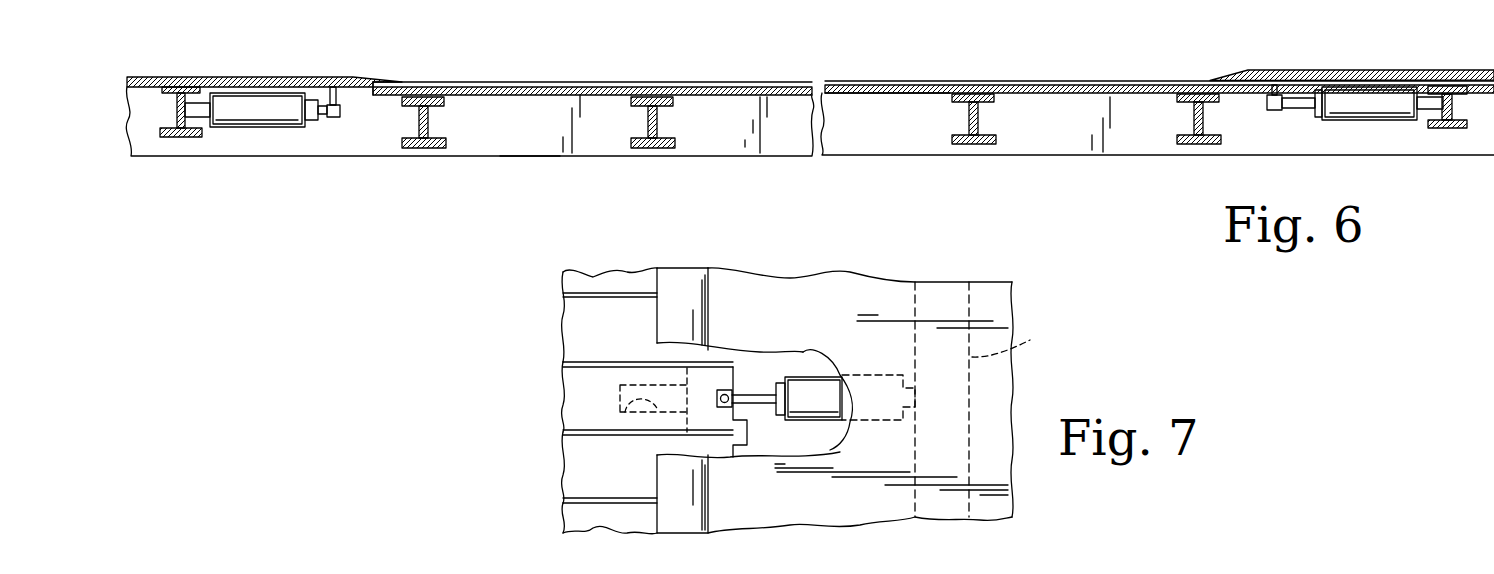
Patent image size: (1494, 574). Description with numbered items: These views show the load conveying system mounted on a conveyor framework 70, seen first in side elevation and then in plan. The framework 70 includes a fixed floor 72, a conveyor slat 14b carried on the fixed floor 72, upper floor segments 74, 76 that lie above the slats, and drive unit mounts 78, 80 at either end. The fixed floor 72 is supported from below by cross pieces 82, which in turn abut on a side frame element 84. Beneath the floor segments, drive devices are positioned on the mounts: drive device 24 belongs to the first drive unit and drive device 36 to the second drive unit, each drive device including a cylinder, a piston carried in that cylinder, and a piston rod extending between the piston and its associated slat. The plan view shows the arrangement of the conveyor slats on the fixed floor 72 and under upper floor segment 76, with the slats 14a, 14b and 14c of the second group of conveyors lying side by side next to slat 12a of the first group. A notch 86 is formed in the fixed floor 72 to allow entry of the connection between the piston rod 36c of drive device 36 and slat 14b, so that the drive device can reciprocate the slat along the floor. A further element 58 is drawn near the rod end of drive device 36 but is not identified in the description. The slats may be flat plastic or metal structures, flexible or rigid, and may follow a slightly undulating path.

In FIG. 7, the conveyor slat 12a is at (580, 516).
In FIG. 7, the conveyor slat 14a is at (588, 333).
In FIG. 6, the conveyor slat 14b is at (843, 81).
In FIG. 7, the conveyor slat 14b is at (585, 398).
In FIG. 7, the conveyor slat 14c is at (585, 462).
In FIG. 6, the drive device 24 is at (277, 128).
In FIG. 6, the drive device 36 is at (1378, 121).
In FIG. 7, the drive device 36 is at (800, 377).
In FIG. 6, the piston rod 36c is at (1297, 109).
In FIG. 6, the mounting bracket 58 is at (1267, 99).
In FIG. 6, the conveyor framework 70 is at (377, 130).
In FIG. 6, the fixed floor 72 is at (910, 96).
In FIG. 7, the fixed floor 72 is at (688, 366).
In FIG. 6, the upper floor segment 74 is at (287, 77).
In FIG. 6, the upper floor segment 76 is at (1308, 70).
In FIG. 7, the upper floor segment 76 is at (870, 305).
In FIG. 6, the drive unit mount 78 is at (197, 138).
In FIG. 6, the drive unit mount 80 is at (1452, 129).
In FIG. 7, the drive unit mount 80 is at (1020, 338).
In FIG. 6, the cross piece 82 is at (432, 121).
In FIG. 6, the side frame element 84 is at (556, 136).
In FIG. 7, the notch 86 is at (628, 398).